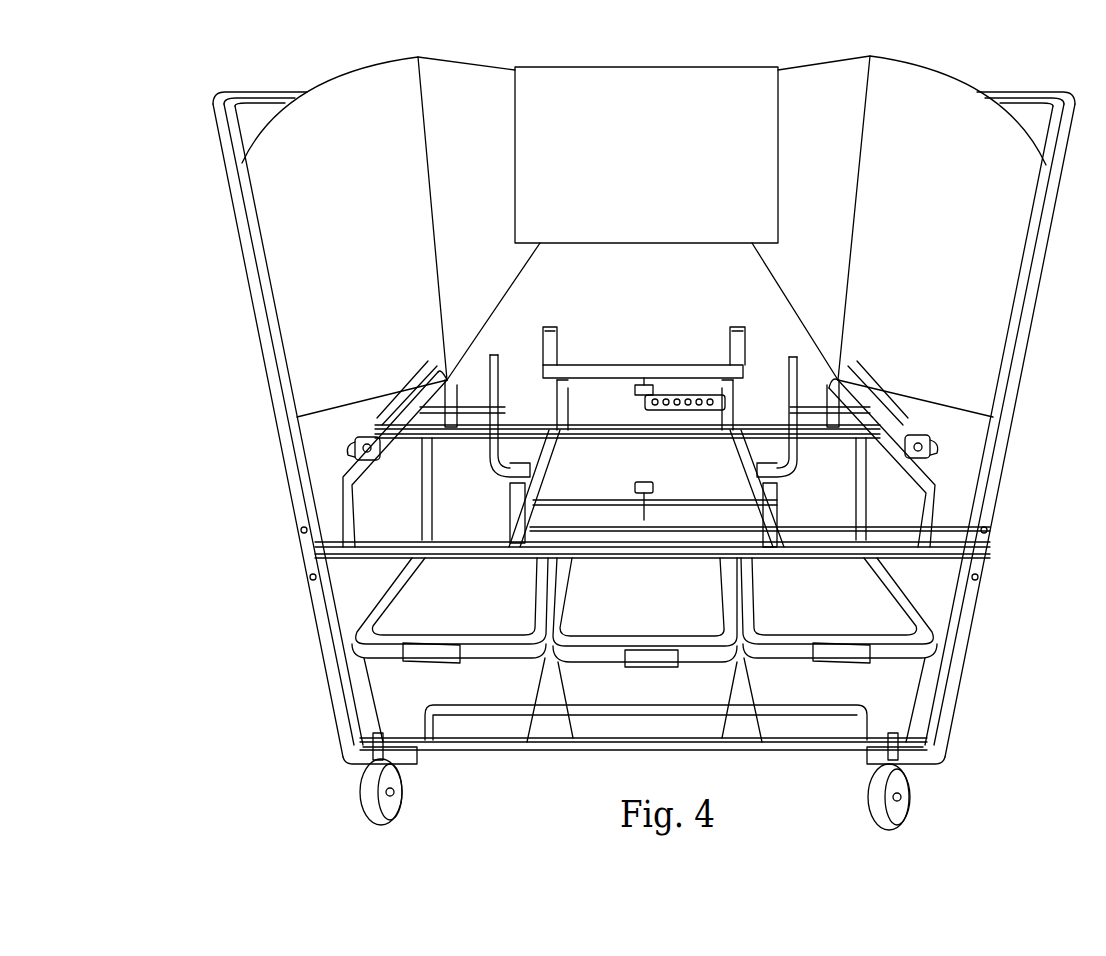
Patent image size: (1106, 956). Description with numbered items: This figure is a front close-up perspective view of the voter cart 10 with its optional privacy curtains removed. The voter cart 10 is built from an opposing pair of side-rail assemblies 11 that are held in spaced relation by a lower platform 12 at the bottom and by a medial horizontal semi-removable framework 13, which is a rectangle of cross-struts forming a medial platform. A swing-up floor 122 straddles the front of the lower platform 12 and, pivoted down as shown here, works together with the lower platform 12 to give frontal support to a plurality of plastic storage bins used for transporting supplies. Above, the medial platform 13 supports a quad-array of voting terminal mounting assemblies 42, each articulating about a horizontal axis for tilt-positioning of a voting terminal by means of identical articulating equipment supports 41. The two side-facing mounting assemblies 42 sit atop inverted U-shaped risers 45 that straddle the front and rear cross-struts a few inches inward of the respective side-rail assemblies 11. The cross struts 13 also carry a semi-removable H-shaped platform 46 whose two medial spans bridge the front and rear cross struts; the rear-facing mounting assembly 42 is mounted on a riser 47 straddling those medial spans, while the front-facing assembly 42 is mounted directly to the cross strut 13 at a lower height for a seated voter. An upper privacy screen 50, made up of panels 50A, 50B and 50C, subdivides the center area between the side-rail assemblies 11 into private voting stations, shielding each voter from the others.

The voter cart 10 is at (255, 411).
The side-rail assemblies 11 is at (247, 283).
The lower platform 12 is at (370, 740).
The medial horizontal semi-removable framework 13 is at (950, 510).
The articulating equipment supports 41 is at (837, 378).
The voting terminal mounting assemblies 42 is at (362, 419).
The inverted U-shaped risers 45 is at (380, 481).
The H-shaped platform 46 is at (608, 498).
The riser 47 is at (563, 400).
The upper privacy screen 50 is at (644, 205).
The privacy screen panel 50A is at (344, 218).
The privacy screen panel 50B is at (644, 218).
The privacy screen panel 50C is at (942, 218).
The swing-up floor 122 is at (490, 748).